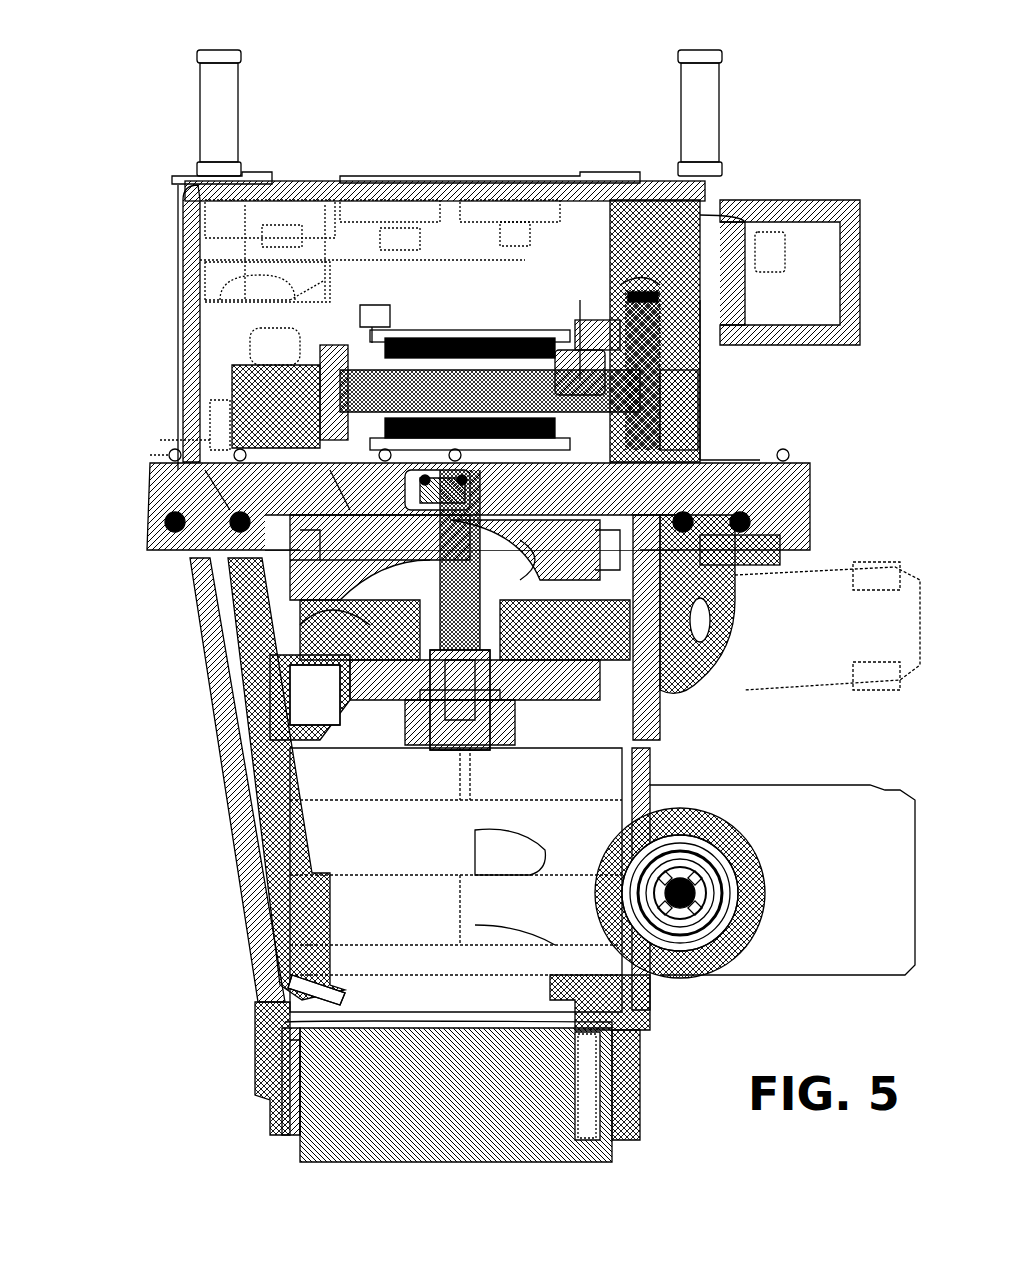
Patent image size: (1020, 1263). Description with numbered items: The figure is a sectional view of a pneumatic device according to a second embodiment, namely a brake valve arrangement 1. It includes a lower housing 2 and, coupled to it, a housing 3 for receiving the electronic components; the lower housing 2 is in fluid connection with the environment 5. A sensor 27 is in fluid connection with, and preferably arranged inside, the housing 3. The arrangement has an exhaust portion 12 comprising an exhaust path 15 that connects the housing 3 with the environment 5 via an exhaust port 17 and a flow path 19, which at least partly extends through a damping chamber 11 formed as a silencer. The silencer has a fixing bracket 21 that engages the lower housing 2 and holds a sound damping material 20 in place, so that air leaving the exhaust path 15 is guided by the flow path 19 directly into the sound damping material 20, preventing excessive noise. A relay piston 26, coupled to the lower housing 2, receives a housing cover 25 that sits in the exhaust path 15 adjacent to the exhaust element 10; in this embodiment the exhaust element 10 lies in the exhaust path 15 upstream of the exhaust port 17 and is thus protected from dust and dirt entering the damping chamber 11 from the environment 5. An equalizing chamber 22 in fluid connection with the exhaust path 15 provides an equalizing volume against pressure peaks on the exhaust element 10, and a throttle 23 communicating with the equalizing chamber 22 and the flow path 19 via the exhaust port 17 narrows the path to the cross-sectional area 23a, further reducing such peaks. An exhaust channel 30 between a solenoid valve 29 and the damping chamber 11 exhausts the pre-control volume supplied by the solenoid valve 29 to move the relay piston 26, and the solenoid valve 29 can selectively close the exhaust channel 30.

The brake valve arrangement 1 is at (800, 140).
The lower housing 2 is at (172, 505).
The housing for receiving the electronic components 3 is at (480, 272).
The environment 5 is at (626, 1202).
The exhaust element 10 is at (285, 406).
The damping chamber 11 is at (312, 1076).
The exhaust portion 12 is at (95, 726).
The exhaust path 15 is at (508, 600).
The exhaust port 17 is at (640, 740).
The flow path 19 is at (605, 988).
The sound damping material 20 is at (578, 1098).
The fixing bracket 21 is at (305, 1060).
The equalizing chamber 22 is at (420, 485).
The throttle 23 is at (470, 625).
The narrowed flow cross-sectional area 23a is at (440, 718).
The housing cover 25 is at (760, 548).
The relay piston 26 is at (370, 704).
The sensor 27 is at (745, 340).
The solenoid valve 29 is at (375, 322).
The exhaust channel 30 is at (270, 876).